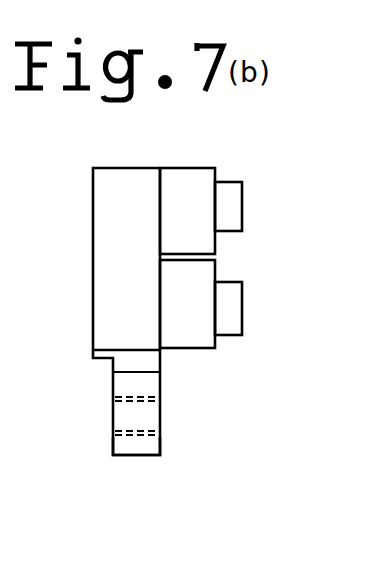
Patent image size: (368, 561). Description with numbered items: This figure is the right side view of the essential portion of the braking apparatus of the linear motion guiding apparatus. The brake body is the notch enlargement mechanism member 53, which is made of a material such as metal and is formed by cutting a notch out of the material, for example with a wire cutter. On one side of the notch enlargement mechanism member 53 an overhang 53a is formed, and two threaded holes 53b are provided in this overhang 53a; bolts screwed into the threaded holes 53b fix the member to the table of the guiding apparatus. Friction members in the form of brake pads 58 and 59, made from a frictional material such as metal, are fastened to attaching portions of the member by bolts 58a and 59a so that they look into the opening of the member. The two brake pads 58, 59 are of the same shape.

The notch enlargement mechanism member 53 is at (105, 373).
The overhang 53a is at (130, 444).
The threaded holes 53b is at (148, 431).
The brake pad 58 is at (207, 246).
The bolt 58a is at (233, 213).
The brake pad 59 is at (208, 277).
The bolt 59a is at (237, 308).